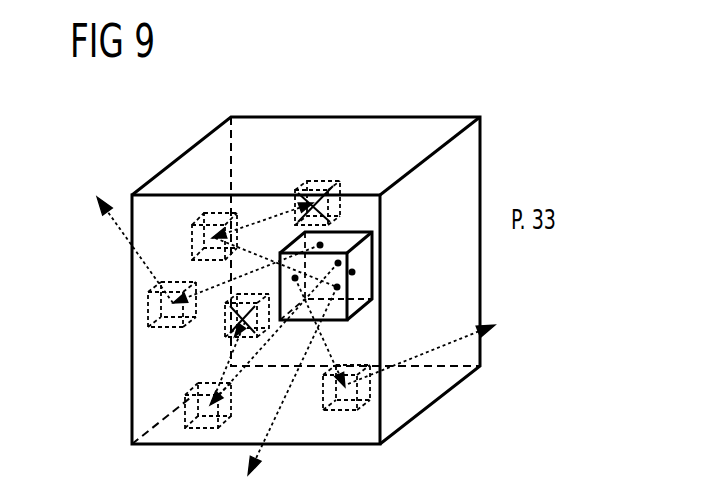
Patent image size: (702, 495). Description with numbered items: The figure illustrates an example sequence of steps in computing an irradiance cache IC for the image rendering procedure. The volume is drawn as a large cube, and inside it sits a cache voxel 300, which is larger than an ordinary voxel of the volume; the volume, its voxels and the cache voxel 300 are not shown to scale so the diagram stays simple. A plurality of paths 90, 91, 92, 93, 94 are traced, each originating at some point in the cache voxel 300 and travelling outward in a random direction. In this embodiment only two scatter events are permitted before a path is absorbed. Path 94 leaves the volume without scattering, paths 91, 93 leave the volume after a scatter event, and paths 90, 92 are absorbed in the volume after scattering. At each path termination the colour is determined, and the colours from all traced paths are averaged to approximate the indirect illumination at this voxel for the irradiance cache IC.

The irradiance cache IC is at (445, 101).
The cache voxel 300 is at (366, 273).
The path 90 is at (258, 220).
The path 91 is at (121, 237).
The path 92 is at (217, 384).
The path 93 is at (453, 345).
The path 94 is at (283, 408).